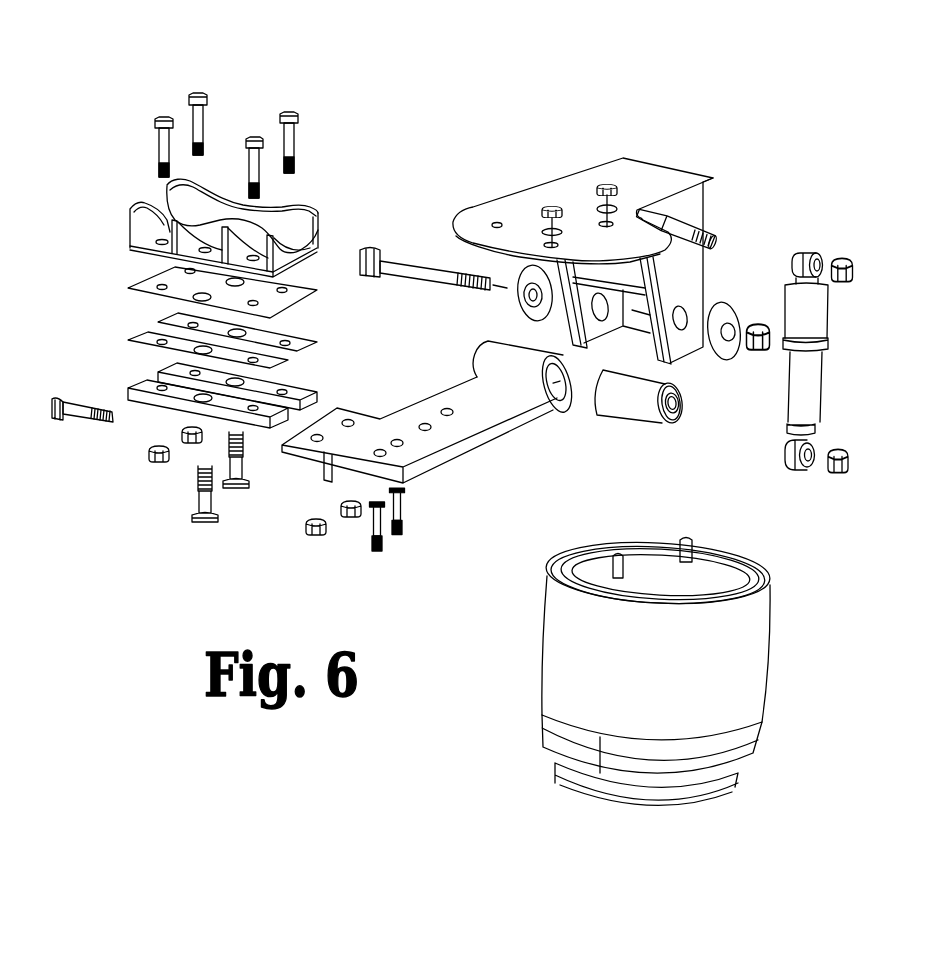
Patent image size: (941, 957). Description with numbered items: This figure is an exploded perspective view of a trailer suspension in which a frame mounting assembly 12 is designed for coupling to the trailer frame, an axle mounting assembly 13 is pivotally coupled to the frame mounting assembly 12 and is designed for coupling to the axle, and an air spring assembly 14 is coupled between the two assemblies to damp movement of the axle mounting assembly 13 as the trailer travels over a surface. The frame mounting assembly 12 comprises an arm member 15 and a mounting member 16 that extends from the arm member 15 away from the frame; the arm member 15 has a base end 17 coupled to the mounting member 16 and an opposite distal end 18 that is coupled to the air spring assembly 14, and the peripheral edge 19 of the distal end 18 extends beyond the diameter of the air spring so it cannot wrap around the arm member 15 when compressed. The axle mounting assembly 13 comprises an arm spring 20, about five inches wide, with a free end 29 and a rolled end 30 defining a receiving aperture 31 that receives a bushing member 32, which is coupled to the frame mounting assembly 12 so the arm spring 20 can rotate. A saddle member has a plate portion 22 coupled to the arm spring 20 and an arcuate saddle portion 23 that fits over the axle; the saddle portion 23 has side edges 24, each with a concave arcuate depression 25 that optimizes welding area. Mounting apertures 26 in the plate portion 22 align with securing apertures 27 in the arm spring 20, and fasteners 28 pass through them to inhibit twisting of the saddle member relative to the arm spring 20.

The frame mounting assembly 12 is at (599, 222).
The axle mounting assembly 13 is at (114, 444).
The air spring assembly 14 is at (785, 650).
The arm member 15 is at (577, 190).
The mounting member 16 is at (801, 330).
The base end 17 is at (640, 173).
The distal end 18 is at (507, 244).
The peripheral edge 19 is at (460, 213).
The arm spring 20 is at (426, 440).
The plate portion 22 is at (307, 258).
The saddle portion 23 is at (297, 215).
The side edges 24 is at (135, 214).
The concave arcuate depression 25 is at (217, 183).
The mounting apertures 26 is at (200, 268).
The securing apertures 27 is at (427, 430).
The fasteners 28 is at (205, 521).
The free end 29 is at (360, 467).
The rolled end 30 is at (492, 372).
The receiving aperture 31 is at (638, 403).
The bushing member 32 is at (855, 331).